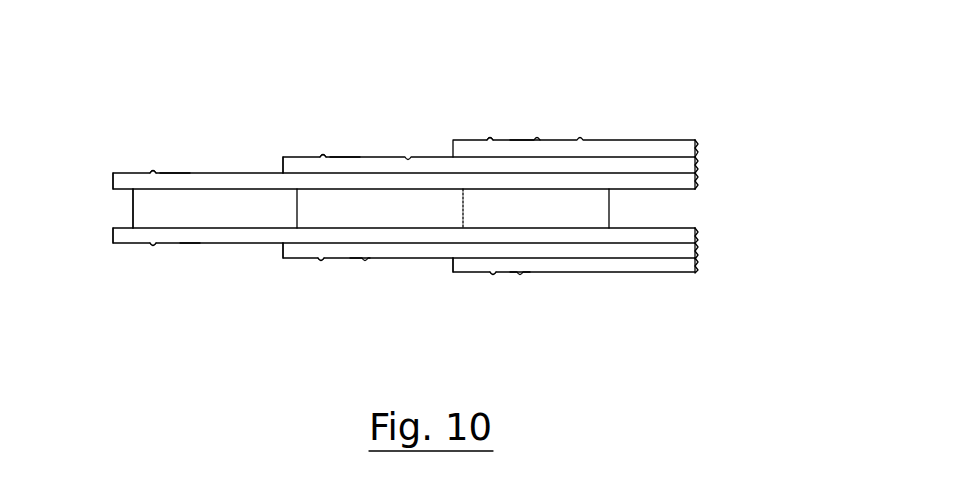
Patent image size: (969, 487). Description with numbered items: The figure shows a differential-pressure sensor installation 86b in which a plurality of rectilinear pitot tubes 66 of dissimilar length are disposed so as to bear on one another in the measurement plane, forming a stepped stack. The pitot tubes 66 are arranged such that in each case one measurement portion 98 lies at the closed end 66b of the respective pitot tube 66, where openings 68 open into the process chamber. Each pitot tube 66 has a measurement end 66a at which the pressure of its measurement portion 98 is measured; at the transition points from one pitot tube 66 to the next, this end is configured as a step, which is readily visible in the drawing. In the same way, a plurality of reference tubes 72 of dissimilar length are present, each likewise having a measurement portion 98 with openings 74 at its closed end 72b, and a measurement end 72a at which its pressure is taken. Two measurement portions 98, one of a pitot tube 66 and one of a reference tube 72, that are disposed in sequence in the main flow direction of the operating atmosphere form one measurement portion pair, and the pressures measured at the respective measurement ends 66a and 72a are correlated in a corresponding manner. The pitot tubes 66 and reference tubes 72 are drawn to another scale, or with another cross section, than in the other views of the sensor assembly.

The pitot tube 66 is at (123, 243).
The measurement end of pitot tube 66a is at (113, 238).
The closed end of pitot tube 66b is at (699, 235).
The openings 68 is at (153, 247).
The reference tube 72 is at (132, 178).
The measurement end of reference tube 72a is at (113, 178).
The closed end of reference tube 72b is at (699, 147).
The opening of reference tube 74 is at (156, 171).
The differential-pressure sensor installation 86b is at (224, 90).
The measurement portion 98 is at (173, 173).